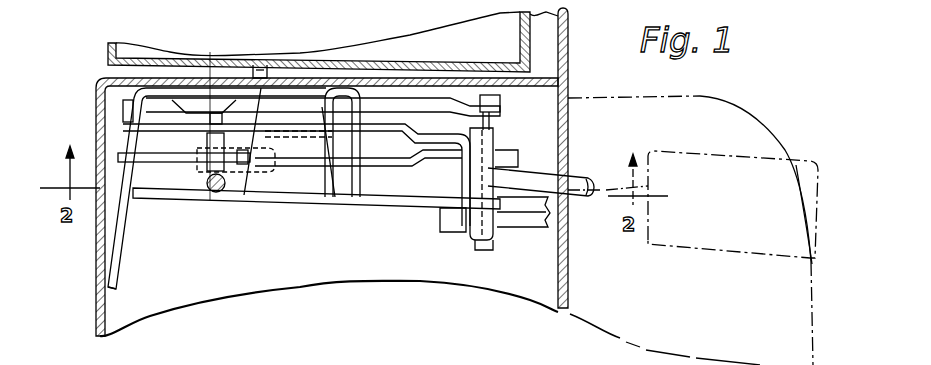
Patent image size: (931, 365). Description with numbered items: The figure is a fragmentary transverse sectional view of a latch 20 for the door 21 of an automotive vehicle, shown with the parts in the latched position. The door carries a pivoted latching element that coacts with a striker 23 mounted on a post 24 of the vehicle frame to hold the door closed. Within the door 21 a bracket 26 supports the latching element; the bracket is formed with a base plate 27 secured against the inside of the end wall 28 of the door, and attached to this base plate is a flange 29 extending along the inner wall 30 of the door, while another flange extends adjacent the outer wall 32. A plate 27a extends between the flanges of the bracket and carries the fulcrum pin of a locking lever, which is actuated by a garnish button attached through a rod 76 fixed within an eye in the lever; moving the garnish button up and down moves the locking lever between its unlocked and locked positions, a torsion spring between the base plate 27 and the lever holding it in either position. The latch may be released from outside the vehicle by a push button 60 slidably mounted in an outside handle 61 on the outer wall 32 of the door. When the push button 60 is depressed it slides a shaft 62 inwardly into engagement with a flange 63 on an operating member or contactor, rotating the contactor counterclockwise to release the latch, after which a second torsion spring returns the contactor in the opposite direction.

The latch 20 is at (208, 48).
The door 21 is at (96, 297).
The striker 23 is at (283, 65).
The post 24 is at (108, 50).
The bracket 26 is at (122, 130).
The base plate 27 is at (425, 98).
The plate 27a is at (399, 208).
The end wall 28 is at (460, 86).
The flange 29 is at (124, 232).
The inner wall 30 is at (96, 268).
The outer wall 32 is at (568, 137).
The push button 60 is at (808, 162).
The outside handle 61 is at (712, 100).
The shaft 62 is at (592, 176).
The flange 63 is at (484, 226).
The rod 76 is at (218, 196).